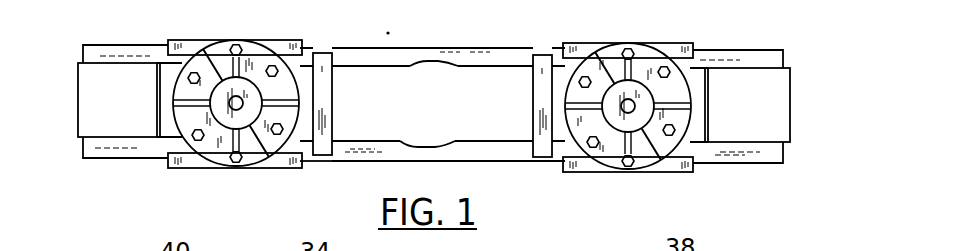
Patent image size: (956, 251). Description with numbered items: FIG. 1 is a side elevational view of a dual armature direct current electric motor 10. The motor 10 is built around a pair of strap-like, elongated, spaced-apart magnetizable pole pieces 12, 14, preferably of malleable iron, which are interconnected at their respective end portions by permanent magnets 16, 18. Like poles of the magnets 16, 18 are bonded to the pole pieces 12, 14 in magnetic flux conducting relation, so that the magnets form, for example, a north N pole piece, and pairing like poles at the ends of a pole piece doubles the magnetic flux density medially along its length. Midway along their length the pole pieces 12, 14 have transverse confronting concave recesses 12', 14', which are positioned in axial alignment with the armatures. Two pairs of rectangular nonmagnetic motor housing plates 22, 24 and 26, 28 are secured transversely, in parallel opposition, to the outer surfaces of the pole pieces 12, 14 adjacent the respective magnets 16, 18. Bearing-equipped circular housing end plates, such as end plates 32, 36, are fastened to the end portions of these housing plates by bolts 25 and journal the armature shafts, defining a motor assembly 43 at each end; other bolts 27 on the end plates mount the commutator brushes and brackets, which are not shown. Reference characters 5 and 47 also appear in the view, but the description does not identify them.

The tube coupling 5 is at (342, 163).
The dual armature direct current electric motor 10 is at (448, 27).
The magnetizable pole piece 12 is at (432, 35).
The concave recess 12' is at (448, 80).
The magnetizable pole piece 14 is at (432, 173).
The concave recess 14' is at (425, 124).
The permanent magnet 16 is at (76, 138).
The permanent magnet 18 is at (790, 80).
The motor housing plate 22 is at (580, 42).
The motor housing plate 24 is at (588, 177).
The bolt 25 is at (248, 40).
The motor housing plate 26 is at (192, 38).
The bolt 27 is at (192, 130).
The motor housing plate 28 is at (185, 170).
The motor circular housing end plate 32 is at (651, 158).
The motor circular housing end plate 36 is at (248, 40).
The motor assembly 43 is at (652, 42).
The clamping collar 47 is at (333, 85).
The north magnetic pole N is at (388, 48).